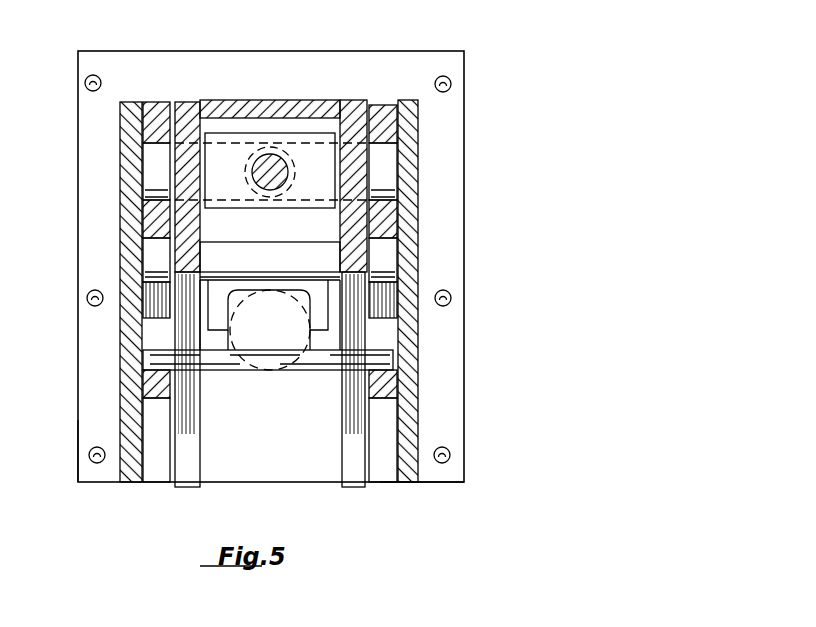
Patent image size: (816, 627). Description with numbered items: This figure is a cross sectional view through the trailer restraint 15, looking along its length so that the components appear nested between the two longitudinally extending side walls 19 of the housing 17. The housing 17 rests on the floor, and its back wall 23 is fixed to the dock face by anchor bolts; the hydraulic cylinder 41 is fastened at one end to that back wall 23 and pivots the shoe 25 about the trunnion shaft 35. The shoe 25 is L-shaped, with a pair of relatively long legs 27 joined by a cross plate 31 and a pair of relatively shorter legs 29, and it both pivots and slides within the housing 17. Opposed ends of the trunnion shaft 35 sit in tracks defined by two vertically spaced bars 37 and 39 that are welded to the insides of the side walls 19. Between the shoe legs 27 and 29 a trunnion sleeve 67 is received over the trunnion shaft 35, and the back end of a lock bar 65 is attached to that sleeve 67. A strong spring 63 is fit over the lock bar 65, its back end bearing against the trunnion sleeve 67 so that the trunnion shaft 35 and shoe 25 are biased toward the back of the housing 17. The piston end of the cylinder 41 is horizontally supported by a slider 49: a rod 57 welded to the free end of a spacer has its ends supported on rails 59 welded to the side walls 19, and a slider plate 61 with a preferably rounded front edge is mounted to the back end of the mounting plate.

The trailer restraint 15 is at (474, 311).
The housing 17 is at (445, 487).
The side walls 19 is at (132, 476).
The back wall 23 is at (93, 470).
The shoe 25 is at (308, 85).
The long legs 27 is at (183, 110).
The shorter legs 29 is at (190, 478).
The cross plate 31 is at (225, 108).
The trunnion shaft 35 is at (383, 160).
The bar 37 is at (382, 222).
The bar 39 is at (383, 118).
The hydraulic cylinder 41 is at (287, 328).
The slider 49 is at (322, 381).
The rod 57 is at (220, 372).
The rails 59 is at (387, 387).
The slider plate 61 is at (380, 262).
The spring 63 is at (246, 172).
The lock bar 65 is at (266, 154).
The trunnion sleeve 67 is at (322, 177).